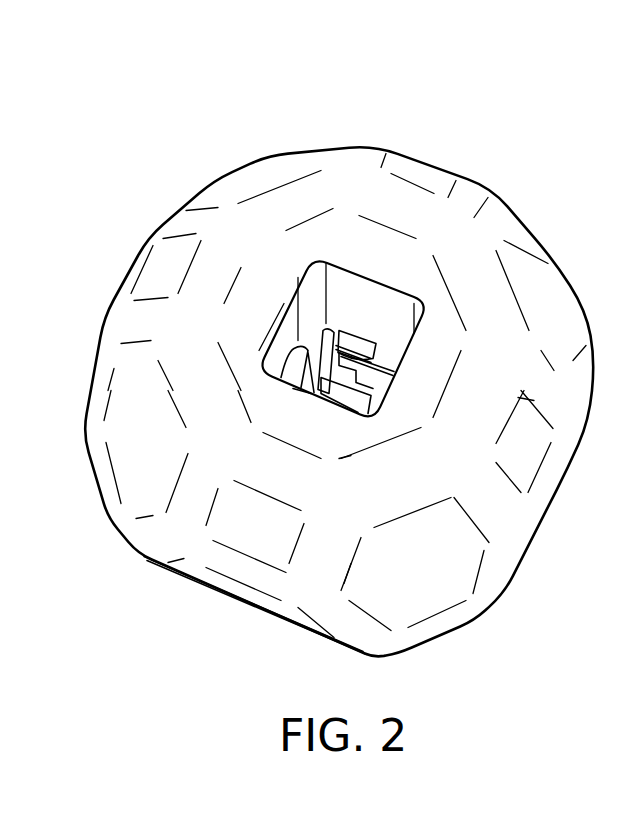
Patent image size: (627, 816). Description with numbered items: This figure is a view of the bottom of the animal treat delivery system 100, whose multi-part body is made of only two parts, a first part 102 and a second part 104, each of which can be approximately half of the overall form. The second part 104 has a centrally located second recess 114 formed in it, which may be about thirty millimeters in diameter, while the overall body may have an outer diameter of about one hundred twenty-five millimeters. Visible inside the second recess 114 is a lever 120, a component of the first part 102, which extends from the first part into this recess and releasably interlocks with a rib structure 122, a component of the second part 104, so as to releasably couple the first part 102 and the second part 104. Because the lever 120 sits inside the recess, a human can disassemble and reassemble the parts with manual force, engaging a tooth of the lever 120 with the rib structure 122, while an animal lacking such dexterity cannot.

The animal treat delivery system 100 is at (514, 136).
The first part 102 is at (244, 626).
The second part 104 is at (266, 181).
The second recess 114 is at (402, 322).
The lever 120 is at (322, 345).
The rib structure 122 is at (292, 370).